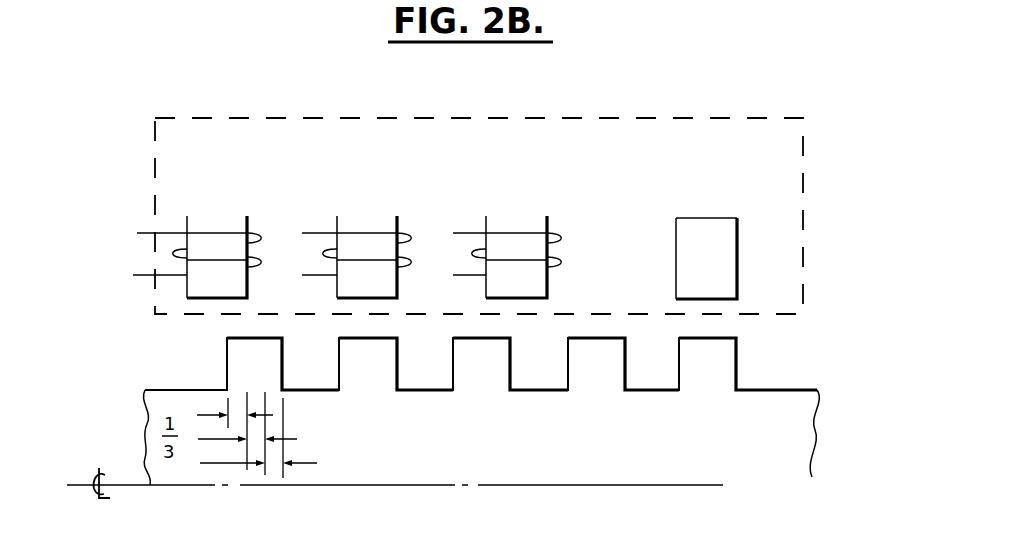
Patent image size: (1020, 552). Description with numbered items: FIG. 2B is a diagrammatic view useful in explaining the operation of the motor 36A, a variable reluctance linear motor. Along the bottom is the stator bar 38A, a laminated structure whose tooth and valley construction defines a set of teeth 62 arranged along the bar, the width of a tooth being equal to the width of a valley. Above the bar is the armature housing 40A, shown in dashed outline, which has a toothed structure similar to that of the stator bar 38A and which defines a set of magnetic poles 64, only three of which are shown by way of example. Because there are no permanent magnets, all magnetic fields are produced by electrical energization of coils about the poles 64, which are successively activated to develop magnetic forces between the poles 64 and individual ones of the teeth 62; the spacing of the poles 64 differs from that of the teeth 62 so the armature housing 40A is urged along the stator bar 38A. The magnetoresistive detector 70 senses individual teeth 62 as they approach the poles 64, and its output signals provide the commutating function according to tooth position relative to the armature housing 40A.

The armature housing 40A is at (600, 118).
The magnetic poles 64 is at (232, 291).
The magnetoresistive detector 70 is at (722, 253).
The motor 36A is at (815, 505).
The teeth 62 is at (268, 372).
The stator bar 38A is at (688, 467).